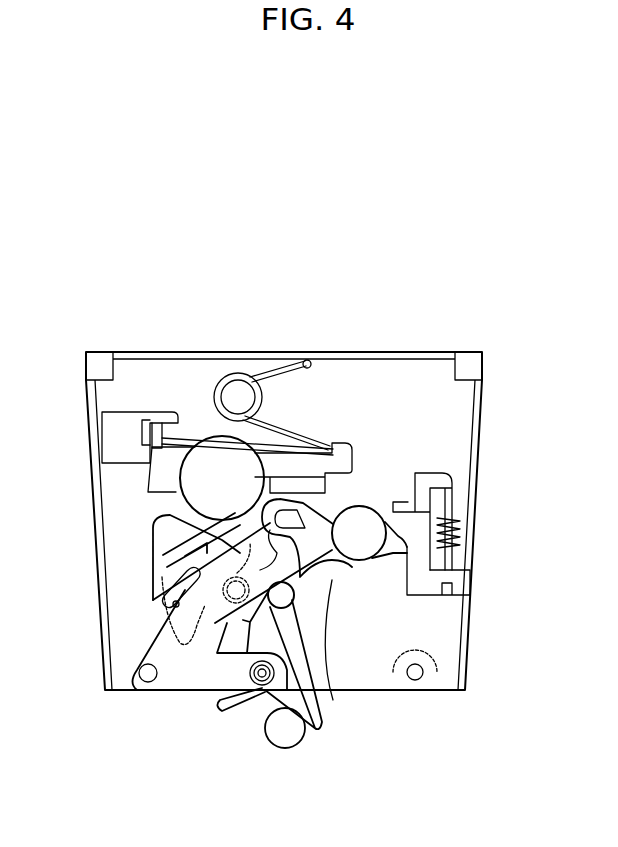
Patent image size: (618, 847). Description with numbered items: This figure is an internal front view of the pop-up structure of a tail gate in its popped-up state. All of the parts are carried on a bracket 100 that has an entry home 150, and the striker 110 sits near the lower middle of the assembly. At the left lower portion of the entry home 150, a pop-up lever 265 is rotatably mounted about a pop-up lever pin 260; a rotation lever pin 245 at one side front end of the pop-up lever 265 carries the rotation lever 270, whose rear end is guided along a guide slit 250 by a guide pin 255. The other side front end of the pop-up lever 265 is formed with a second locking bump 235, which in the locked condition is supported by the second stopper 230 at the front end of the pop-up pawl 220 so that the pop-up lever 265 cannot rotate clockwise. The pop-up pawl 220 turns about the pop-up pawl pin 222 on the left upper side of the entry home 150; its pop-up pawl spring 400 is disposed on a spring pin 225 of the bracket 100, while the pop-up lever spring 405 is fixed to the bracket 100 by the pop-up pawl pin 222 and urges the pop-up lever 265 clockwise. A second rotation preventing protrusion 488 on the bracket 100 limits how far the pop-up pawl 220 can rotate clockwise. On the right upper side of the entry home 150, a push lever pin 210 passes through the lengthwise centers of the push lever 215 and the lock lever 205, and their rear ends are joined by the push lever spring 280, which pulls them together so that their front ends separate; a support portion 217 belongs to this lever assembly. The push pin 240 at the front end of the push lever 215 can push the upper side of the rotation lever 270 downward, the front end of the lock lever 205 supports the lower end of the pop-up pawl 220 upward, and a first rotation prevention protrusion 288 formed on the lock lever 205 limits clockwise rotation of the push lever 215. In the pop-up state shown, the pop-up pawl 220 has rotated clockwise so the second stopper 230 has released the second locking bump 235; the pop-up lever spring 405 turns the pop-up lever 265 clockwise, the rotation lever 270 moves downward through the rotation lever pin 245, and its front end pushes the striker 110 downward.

The bracket 100 is at (453, 413).
The striker 110 is at (288, 740).
The entry home 150 is at (335, 650).
The lock lever 205 is at (317, 462).
The push lever pin 210 is at (390, 505).
The push lever 215 is at (367, 517).
The support portion 217 is at (328, 522).
The pop-up pawl 220 is at (287, 470).
The pop-up pawl pin 222 is at (223, 483).
The spring pin 225 is at (237, 402).
The second stopper 230 is at (165, 472).
The second locking bump 235 is at (195, 535).
The push pin 240 is at (322, 670).
The rotation lever pin 245 is at (262, 692).
The guide slit 250 is at (172, 590).
The guide pin 255 is at (190, 692).
The pop-up lever pin 260 is at (138, 672).
The pop-up lever 265 is at (163, 692).
The rotation lever 270 is at (217, 707).
The push lever spring 280 is at (452, 565).
The first rotation prevention protrusion 288 is at (440, 520).
The pop-up pawl spring 400 is at (253, 365).
The pop-up lever spring 405 is at (190, 578).
The second rotation preventing protrusion 488 is at (160, 422).